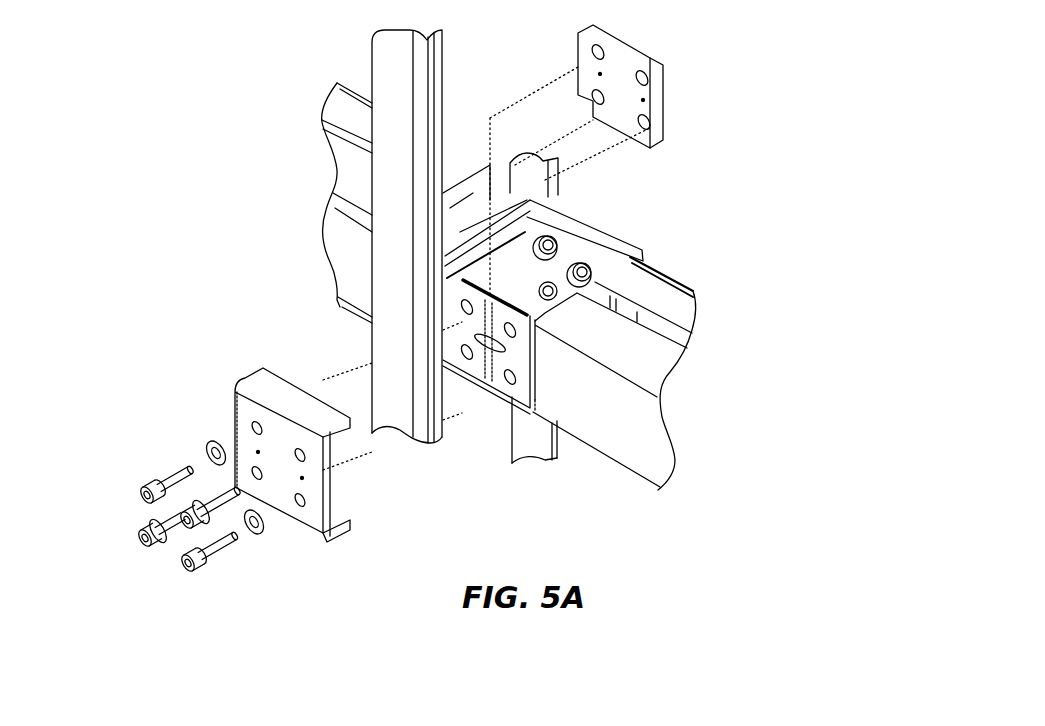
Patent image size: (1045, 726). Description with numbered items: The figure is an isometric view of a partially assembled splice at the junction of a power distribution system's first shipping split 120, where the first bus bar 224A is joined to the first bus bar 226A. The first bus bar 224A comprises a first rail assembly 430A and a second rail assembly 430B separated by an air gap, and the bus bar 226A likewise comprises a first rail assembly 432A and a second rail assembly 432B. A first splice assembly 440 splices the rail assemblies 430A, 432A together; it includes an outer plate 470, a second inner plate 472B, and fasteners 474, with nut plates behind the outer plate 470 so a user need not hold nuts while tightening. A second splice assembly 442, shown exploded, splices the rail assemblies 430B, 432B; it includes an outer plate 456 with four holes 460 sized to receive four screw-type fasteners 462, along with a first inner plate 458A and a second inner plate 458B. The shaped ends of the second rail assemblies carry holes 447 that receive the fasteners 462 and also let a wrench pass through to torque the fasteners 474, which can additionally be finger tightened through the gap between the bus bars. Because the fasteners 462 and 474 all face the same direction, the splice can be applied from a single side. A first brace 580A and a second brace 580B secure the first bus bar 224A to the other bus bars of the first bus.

The first shipping split 120 is at (240, 110).
The first bus bar 224A is at (312, 233).
The first bus bar 226A is at (705, 284).
The first rail assembly 430A is at (336, 86).
The second rail assembly 430B is at (336, 181).
The first rail assembly 432A is at (692, 318).
The second rail assembly 432B is at (668, 378).
The first splice assembly 440 is at (662, 181).
The second splice assembly 442 is at (310, 563).
The holes 447 is at (512, 390).
The outer plate 456 is at (255, 373).
The first inner plate 458A is at (465, 287).
The second inner plate 458B is at (643, 44).
The holes 460 is at (252, 427).
The fasteners 462 is at (142, 533).
The outer plate 470 is at (641, 253).
The second inner plate 472B is at (586, 246).
The fasteners 474 is at (581, 263).
The first brace 580A is at (446, 64).
The second brace 580B is at (512, 461).